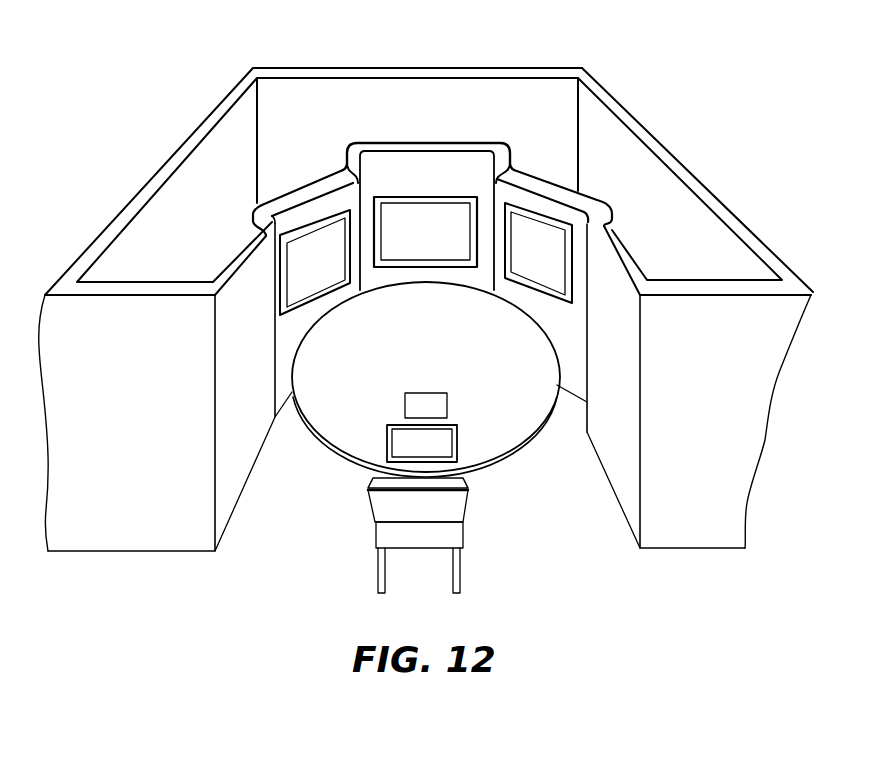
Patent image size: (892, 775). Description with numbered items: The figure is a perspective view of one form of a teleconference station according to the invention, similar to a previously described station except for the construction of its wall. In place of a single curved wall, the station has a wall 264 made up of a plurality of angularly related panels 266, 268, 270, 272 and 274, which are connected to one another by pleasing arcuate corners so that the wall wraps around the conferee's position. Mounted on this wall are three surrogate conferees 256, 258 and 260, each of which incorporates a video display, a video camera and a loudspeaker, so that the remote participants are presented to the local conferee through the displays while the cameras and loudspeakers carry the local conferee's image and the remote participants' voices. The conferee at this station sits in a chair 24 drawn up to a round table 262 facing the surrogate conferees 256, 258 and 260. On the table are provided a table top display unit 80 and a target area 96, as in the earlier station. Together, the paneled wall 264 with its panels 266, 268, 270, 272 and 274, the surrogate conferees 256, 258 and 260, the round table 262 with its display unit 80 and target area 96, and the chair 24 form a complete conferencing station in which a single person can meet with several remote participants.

The chair 24 is at (457, 507).
The table top display unit 80 is at (437, 407).
The target area 96 is at (442, 443).
The surrogate conferee 256 is at (318, 282).
The surrogate conferee 258 is at (432, 248).
The surrogate conferee 260 is at (543, 272).
The round table 262 is at (533, 433).
The wall 264 is at (295, 205).
The panel 266 is at (248, 280).
The panel 268 is at (332, 192).
The panel 270 is at (407, 162).
The panel 272 is at (538, 200).
The panel 274 is at (618, 283).